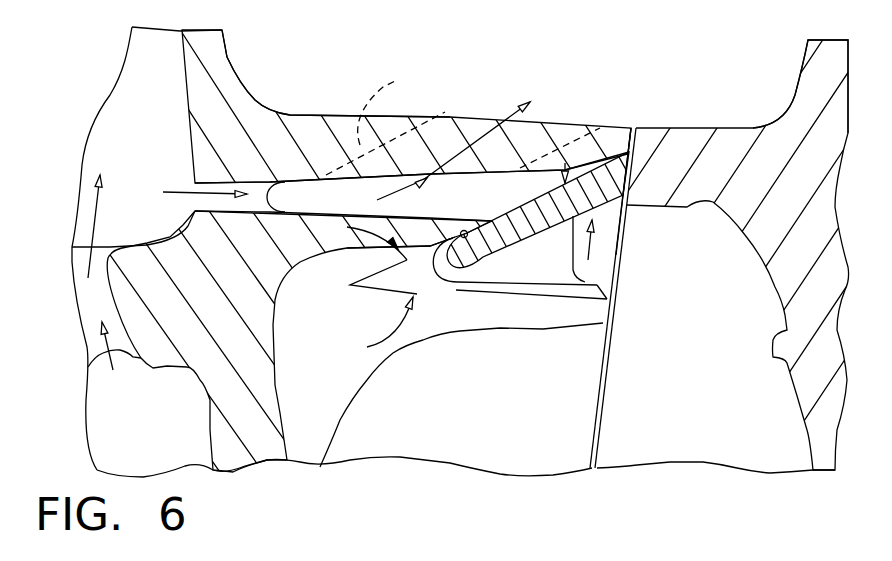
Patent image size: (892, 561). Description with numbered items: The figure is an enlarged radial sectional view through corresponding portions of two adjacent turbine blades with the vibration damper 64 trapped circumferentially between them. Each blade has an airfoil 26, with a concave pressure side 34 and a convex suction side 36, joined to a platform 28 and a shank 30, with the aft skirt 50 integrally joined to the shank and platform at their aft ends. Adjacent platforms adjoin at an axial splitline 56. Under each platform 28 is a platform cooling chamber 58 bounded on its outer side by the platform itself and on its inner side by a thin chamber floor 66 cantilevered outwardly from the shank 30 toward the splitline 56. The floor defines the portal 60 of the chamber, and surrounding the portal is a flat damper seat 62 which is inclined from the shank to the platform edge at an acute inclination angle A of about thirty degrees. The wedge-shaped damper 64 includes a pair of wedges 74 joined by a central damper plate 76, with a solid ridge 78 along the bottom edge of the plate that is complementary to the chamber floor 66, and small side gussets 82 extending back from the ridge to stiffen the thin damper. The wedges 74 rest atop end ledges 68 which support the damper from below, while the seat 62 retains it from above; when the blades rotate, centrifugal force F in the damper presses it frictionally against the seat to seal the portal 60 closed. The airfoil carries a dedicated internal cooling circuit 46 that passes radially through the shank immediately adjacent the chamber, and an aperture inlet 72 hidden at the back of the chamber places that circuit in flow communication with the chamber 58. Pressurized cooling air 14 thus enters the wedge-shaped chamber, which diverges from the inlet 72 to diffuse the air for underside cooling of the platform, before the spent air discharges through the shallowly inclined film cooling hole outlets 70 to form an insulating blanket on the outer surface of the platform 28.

The pressurized cooling air 14 is at (182, 192).
The airfoil 26 is at (123, 77).
The platform 28 is at (340, 116).
The shank 30 is at (300, 410).
The pressure side 34 is at (228, 42).
The suction side 36 is at (807, 68).
The internal cooling circuit 46 is at (135, 121).
The aft skirt 50 is at (523, 447).
The axial splitline 56 is at (615, 190).
The platform cooling chamber 58 is at (300, 210).
The portal 60 is at (477, 228).
The damper seat 62 is at (630, 152).
The vibration damper 64 is at (550, 156).
The chamber floor 66 is at (345, 238).
The end ledge 68 is at (548, 331).
The film cooling hole outlet 70 is at (448, 158).
The aperture inlet 72 is at (195, 199).
The wedge 74 is at (600, 271).
The damper plate 76 is at (607, 218).
The solid ridge 78 is at (468, 256).
The side gusset 82 is at (523, 269).
The acute inclination angle A is at (380, 338).
The centrifugal force F is at (588, 257).